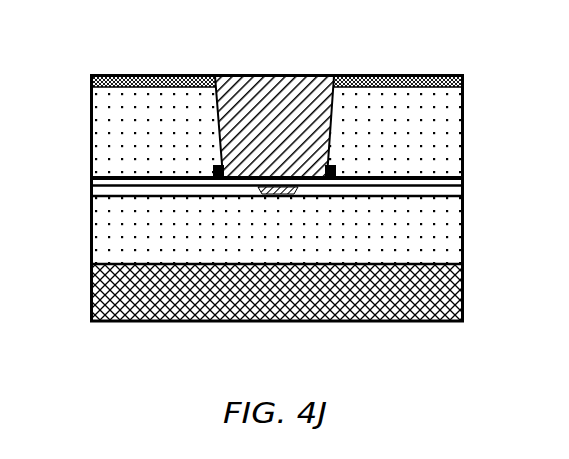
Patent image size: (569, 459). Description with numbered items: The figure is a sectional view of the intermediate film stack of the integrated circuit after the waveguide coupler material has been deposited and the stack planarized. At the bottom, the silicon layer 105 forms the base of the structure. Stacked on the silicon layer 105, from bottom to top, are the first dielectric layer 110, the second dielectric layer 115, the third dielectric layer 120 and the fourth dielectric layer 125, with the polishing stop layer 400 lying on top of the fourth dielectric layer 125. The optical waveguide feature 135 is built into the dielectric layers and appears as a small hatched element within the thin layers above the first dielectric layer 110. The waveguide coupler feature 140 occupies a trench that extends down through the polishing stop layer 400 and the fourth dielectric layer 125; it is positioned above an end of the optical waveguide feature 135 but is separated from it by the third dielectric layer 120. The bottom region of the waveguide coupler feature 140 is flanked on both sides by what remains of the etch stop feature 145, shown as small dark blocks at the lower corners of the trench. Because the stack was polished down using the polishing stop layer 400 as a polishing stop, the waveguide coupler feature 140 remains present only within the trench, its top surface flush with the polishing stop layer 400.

The polishing stop layer 400 is at (465, 76).
The fourth dielectric layer 125 is at (452, 138).
The waveguide coupler feature 140 is at (318, 76).
The etch stop feature 145 is at (213, 170).
The third dielectric layer 120 is at (100, 181).
The second dielectric layer 115 is at (452, 191).
The optical waveguide feature 135 is at (258, 193).
The first dielectric layer 110 is at (452, 242).
The silicon layer 105 is at (452, 299).